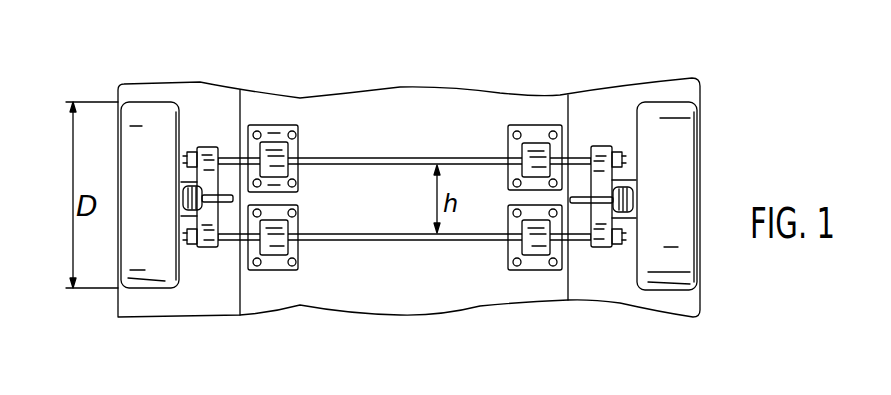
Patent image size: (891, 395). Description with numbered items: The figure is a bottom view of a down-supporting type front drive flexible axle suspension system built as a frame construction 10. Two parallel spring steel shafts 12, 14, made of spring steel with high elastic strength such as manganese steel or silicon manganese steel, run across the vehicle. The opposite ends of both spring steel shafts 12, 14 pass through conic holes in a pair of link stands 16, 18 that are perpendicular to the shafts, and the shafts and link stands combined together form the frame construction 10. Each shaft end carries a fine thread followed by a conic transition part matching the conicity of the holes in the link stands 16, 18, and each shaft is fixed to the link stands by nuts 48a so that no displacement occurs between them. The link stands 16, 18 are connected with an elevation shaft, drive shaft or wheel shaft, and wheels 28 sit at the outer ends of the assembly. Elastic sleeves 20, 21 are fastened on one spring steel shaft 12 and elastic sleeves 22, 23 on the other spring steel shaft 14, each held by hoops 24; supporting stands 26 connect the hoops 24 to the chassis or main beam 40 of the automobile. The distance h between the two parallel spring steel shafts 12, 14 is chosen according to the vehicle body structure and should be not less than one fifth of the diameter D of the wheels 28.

The frame construction 10 is at (476, 134).
The spring steel shaft 12 is at (365, 243).
The spring steel shaft 14 is at (400, 166).
The link stand 16 is at (210, 243).
The link stand 18 is at (601, 248).
The elastic sleeve 20 is at (272, 264).
The elastic sleeve 21 is at (517, 266).
The elastic sleeve 22 is at (257, 131).
The elastic sleeve 23 is at (541, 131).
The hoop 24 is at (296, 128).
The supporting stand 26 is at (279, 147).
The wheel 28 is at (146, 268).
The chassis or main beam 40 is at (462, 79).
The nut 48a is at (198, 150).